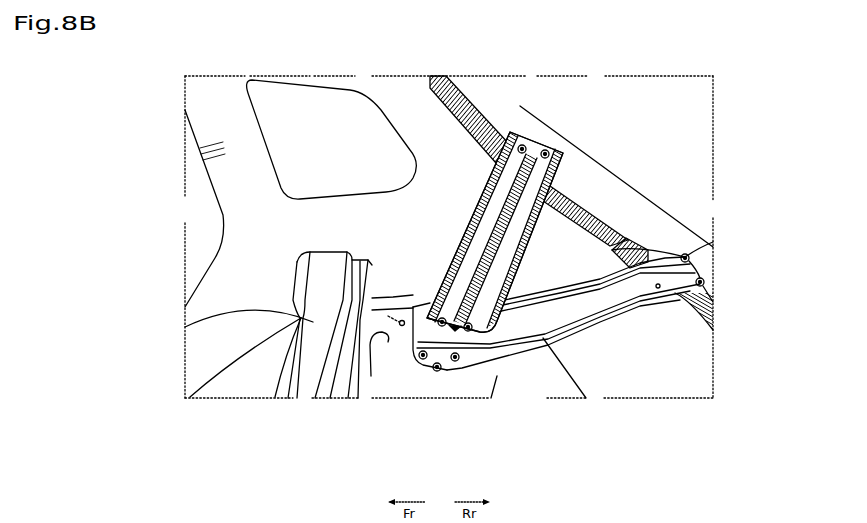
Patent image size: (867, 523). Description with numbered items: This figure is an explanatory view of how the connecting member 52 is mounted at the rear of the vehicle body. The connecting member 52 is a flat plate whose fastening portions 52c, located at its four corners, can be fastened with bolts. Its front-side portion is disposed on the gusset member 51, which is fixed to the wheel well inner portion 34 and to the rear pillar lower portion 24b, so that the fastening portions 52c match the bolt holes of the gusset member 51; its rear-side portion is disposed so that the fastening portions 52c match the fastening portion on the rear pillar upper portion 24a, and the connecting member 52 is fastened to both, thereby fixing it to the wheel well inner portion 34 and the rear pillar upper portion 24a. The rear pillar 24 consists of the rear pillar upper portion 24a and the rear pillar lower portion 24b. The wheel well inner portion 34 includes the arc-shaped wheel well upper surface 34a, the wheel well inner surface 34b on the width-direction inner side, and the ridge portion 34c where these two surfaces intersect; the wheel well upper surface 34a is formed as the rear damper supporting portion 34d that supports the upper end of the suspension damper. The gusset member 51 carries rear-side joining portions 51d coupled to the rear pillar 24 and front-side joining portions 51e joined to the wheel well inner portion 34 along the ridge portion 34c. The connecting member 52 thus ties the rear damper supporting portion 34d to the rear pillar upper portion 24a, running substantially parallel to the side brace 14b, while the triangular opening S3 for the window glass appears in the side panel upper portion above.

The opening S3 is at (332, 139).
The side brace 14b is at (185, 328).
The rear pillar 24 is at (617, 155).
The rear pillar upper portion 24a is at (517, 104).
The rear pillar lower portion 24b is at (655, 218).
The wheel well inner portion 34 is at (518, 337).
The wheel well upper surface 34a is at (408, 305).
The wheel well inner surface 34b is at (518, 390).
The ridge portion 34c is at (371, 376).
The rear damper supporting portion 34d is at (417, 338).
The gusset member 51 is at (573, 326).
The rear-side joining portion 51d is at (697, 262).
The front-side joining portion 51e is at (419, 359).
The connecting member 52 is at (503, 216).
The fastening portion 52c is at (549, 151).